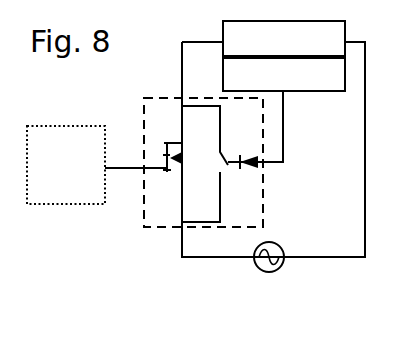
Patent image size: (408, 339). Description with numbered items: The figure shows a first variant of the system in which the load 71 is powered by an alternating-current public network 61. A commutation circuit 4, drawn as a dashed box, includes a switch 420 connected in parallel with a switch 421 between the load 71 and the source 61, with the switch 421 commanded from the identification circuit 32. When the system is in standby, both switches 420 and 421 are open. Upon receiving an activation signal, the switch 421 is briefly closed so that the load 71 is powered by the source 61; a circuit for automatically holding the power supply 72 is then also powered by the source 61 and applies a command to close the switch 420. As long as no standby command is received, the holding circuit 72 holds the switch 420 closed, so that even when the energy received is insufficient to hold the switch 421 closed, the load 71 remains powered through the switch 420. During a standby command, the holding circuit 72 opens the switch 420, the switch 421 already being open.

The commutation circuit 4 is at (158, 228).
The identification circuit 32 is at (52, 178).
The alternating-current public network 61 is at (266, 272).
The load 71 is at (270, 50).
The circuit for automatically holding the power supply 72 is at (270, 86).
The switch 420 is at (232, 177).
The switch 421 is at (167, 144).